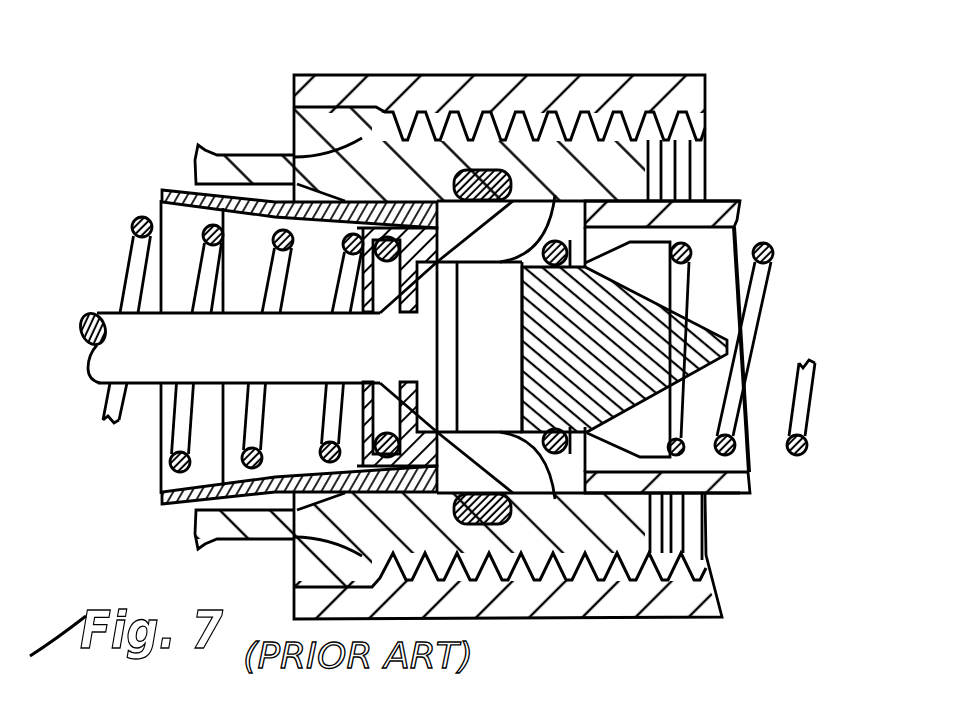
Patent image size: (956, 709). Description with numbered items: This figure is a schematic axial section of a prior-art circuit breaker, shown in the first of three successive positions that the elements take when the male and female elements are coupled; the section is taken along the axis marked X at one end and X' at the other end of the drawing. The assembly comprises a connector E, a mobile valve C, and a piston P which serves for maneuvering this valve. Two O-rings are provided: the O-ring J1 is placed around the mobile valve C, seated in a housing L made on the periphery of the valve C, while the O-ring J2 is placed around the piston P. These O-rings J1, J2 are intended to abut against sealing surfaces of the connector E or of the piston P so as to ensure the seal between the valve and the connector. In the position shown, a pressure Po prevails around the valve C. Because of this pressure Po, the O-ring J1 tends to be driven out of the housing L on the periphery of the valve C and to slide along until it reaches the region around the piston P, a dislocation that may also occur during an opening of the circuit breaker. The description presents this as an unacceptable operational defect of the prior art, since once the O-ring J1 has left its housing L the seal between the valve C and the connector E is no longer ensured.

The connector E is at (540, 470).
The mobile valve C is at (690, 342).
The O-ring J1 is at (553, 195).
The O-ring J2 is at (388, 238).
The housing L is at (572, 265).
The pressure Po is at (700, 349).
The piston P is at (150, 320).
The axis end X is at (56, 349).
The axis end X prime X' is at (793, 343).